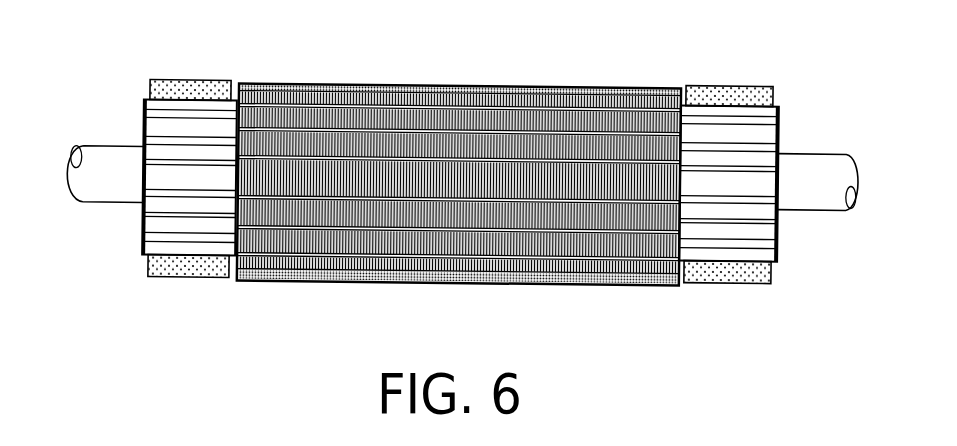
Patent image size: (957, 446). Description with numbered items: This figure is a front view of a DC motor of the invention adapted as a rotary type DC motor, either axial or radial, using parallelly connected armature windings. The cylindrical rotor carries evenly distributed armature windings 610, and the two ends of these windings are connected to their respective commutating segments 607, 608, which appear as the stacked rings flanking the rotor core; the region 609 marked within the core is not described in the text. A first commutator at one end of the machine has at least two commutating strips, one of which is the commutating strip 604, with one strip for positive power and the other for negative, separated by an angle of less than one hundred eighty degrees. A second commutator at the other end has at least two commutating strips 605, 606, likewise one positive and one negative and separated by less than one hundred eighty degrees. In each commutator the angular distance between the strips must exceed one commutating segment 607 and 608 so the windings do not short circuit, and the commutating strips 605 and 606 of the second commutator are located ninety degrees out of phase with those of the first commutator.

The commutating strip 604 is at (730, 90).
The commutating strip 605 is at (195, 83).
The commutating strip 606 is at (188, 282).
The commutating segment 607 is at (765, 137).
The commutating segment 608 is at (152, 126).
The rotor windings / laminations 609 is at (362, 185).
The armature windings 610 is at (563, 85).